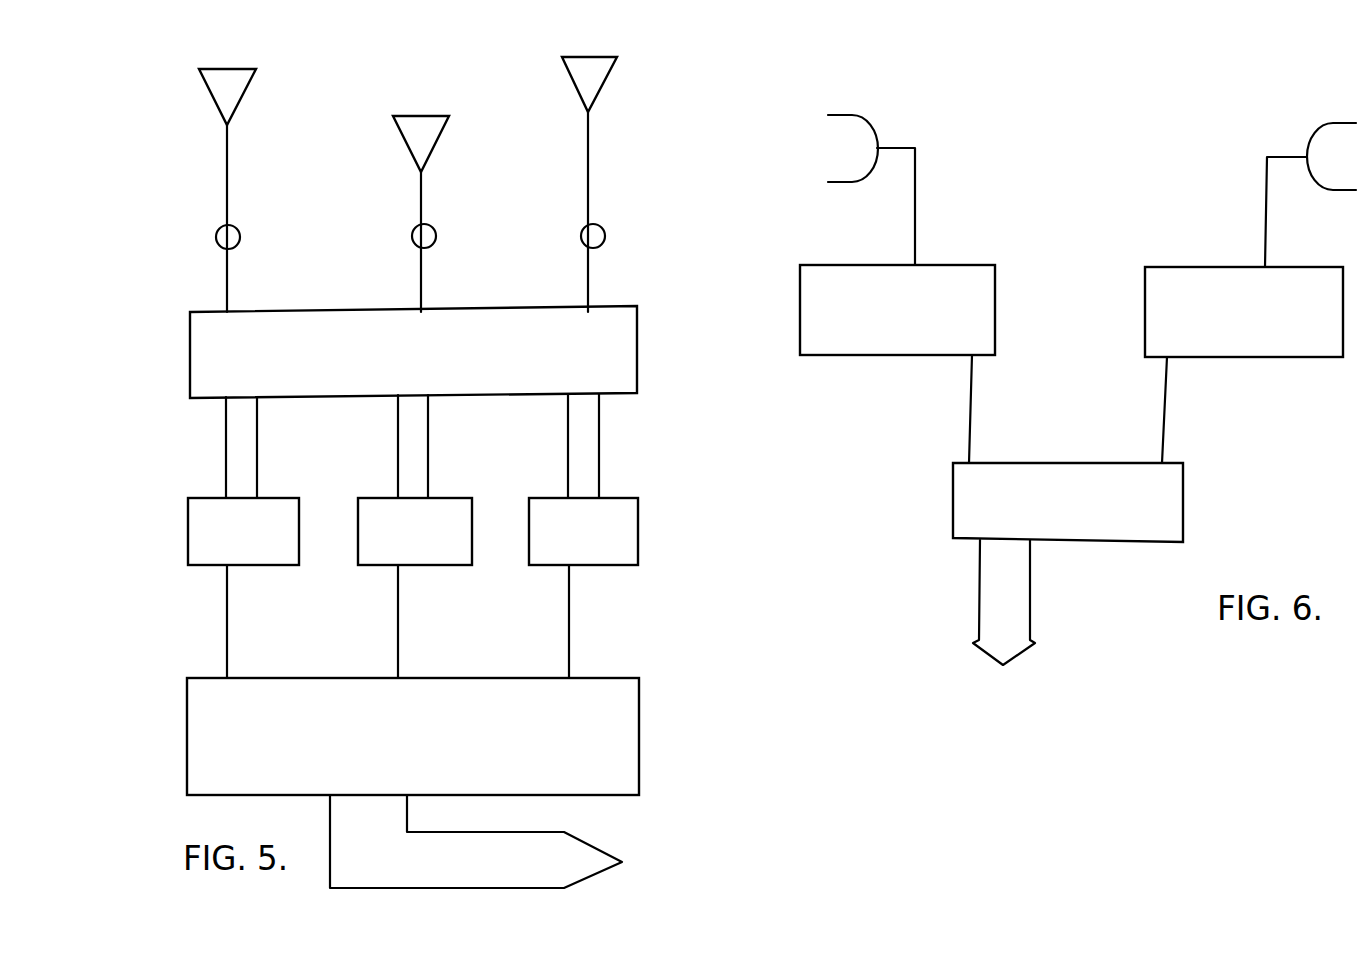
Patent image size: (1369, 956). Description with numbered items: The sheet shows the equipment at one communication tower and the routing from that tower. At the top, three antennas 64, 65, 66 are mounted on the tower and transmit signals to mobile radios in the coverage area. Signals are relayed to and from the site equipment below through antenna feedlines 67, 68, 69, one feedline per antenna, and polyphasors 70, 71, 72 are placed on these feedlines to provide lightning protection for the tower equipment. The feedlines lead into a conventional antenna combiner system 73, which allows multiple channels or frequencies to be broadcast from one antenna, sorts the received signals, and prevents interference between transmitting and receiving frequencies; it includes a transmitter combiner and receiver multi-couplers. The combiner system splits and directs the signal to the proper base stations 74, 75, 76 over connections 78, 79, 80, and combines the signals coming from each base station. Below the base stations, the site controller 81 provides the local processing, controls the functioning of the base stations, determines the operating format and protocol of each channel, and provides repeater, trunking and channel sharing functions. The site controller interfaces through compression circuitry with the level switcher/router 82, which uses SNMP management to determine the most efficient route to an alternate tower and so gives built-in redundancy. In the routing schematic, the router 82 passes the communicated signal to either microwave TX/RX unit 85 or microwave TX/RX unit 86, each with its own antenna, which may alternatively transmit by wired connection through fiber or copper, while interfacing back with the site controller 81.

In FIG. 5, the antenna 64 is at (216, 101).
In FIG. 5, the antenna 65 is at (410, 148).
In FIG. 5, the antenna 66 is at (578, 88).
In FIG. 5, the antenna feedline 67 is at (228, 190).
In FIG. 5, the antenna feedline 68 is at (446, 204).
In FIG. 5, the antenna feedline 69 is at (588, 187).
In FIG. 5, the polyphasor 70 is at (240, 237).
In FIG. 5, the polyphasor 71 is at (436, 236).
In FIG. 5, the polyphasor 72 is at (605, 236).
In FIG. 5, the antenna combiner system 73 is at (402, 367).
In FIG. 5, the base station 74 is at (222, 544).
In FIG. 5, the base station 75 is at (397, 544).
In FIG. 5, the base station 76 is at (565, 544).
In FIG. 5, the transceiver connection 78 is at (227, 463).
In FIG. 5, the transceiver connection 79 is at (399, 453).
In FIG. 5, the transceiver connection 80 is at (568, 457).
In FIG. 5, the site controller 81 is at (394, 740).
In FIG. 6, the site controller 81 is at (1011, 639).
In FIG. 5, the T-1 level switcher/router 82 is at (656, 841).
In FIG. 6, the T-1 level switcher/router 82 is at (1044, 509).
In FIG. 6, the microwave TX/RX unit 85 is at (870, 316).
In FIG. 6, the microwave TX/RX unit 86 is at (1226, 320).